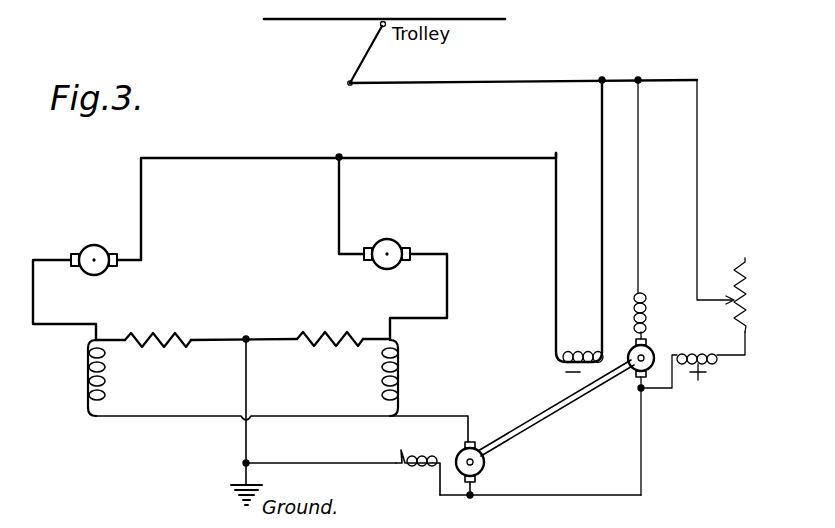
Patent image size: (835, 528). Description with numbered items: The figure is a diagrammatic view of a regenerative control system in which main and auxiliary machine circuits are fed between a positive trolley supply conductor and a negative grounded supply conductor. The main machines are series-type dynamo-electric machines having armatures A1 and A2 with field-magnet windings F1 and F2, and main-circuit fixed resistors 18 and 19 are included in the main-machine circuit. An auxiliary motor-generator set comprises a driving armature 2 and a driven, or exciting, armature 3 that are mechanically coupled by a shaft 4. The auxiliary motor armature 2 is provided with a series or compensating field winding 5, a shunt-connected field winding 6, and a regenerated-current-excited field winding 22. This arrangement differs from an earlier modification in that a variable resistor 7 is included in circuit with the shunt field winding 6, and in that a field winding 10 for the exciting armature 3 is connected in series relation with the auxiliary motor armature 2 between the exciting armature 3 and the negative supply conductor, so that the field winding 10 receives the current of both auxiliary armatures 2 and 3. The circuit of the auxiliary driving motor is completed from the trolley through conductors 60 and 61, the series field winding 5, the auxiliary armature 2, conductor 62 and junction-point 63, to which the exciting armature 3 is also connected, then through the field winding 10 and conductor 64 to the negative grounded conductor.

The conductor 60 is at (565, 80).
The armature A1 is at (103, 247).
The armature A2 is at (398, 242).
The field-magnet winding F1 is at (105, 378).
The field-magnet winding F2 is at (400, 376).
The main-circuit fixed resistor 18 is at (168, 362).
The main-circuit fixed resistor 19 is at (335, 357).
The conductor 64 is at (327, 467).
The field winding 10 is at (431, 464).
The junction-point 63 is at (540, 507).
The driven armature 3 is at (476, 450).
The shaft 4 is at (530, 426).
The driving armature 2 is at (656, 342).
The conductor 62 is at (641, 445).
The conductor 61 is at (638, 258).
The series or compensating field winding 5 is at (647, 312).
The shunt-connected field winding 6 is at (712, 352).
The variable resistor 7 is at (746, 304).
The regenerated-current-excited field winding 22 is at (585, 356).